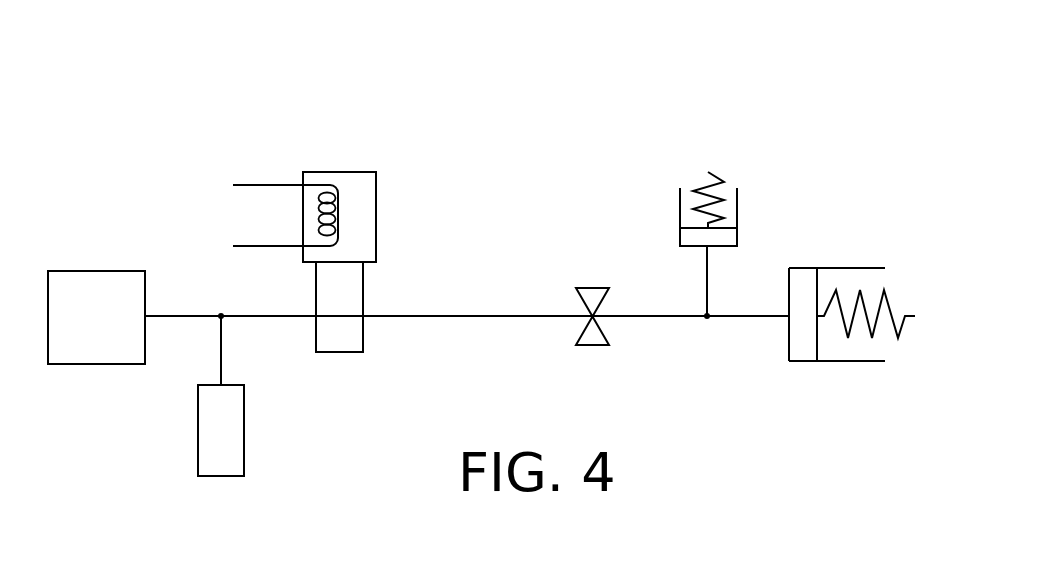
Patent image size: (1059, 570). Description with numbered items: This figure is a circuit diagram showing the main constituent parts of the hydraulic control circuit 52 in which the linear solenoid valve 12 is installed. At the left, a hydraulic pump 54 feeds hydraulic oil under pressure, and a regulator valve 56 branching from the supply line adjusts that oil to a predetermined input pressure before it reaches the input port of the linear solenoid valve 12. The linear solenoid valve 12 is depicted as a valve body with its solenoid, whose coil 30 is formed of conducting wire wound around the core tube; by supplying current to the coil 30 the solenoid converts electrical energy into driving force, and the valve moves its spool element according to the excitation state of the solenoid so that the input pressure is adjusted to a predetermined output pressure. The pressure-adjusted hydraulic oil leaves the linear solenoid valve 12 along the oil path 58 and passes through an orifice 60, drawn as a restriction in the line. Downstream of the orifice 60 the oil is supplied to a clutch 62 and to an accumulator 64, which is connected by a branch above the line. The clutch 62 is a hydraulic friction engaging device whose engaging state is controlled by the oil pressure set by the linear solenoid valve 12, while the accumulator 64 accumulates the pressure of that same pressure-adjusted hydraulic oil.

The linear solenoid valve 12 is at (403, 207).
The coil 30 is at (317, 184).
The hydraulic control circuit 52 is at (615, 66).
The hydraulic pump 54 is at (94, 254).
The regulator valve 56 is at (275, 437).
The oil path 58 is at (495, 318).
The orifice 60 is at (588, 276).
The clutch 62 is at (771, 340).
The accumulator 64 is at (749, 202).